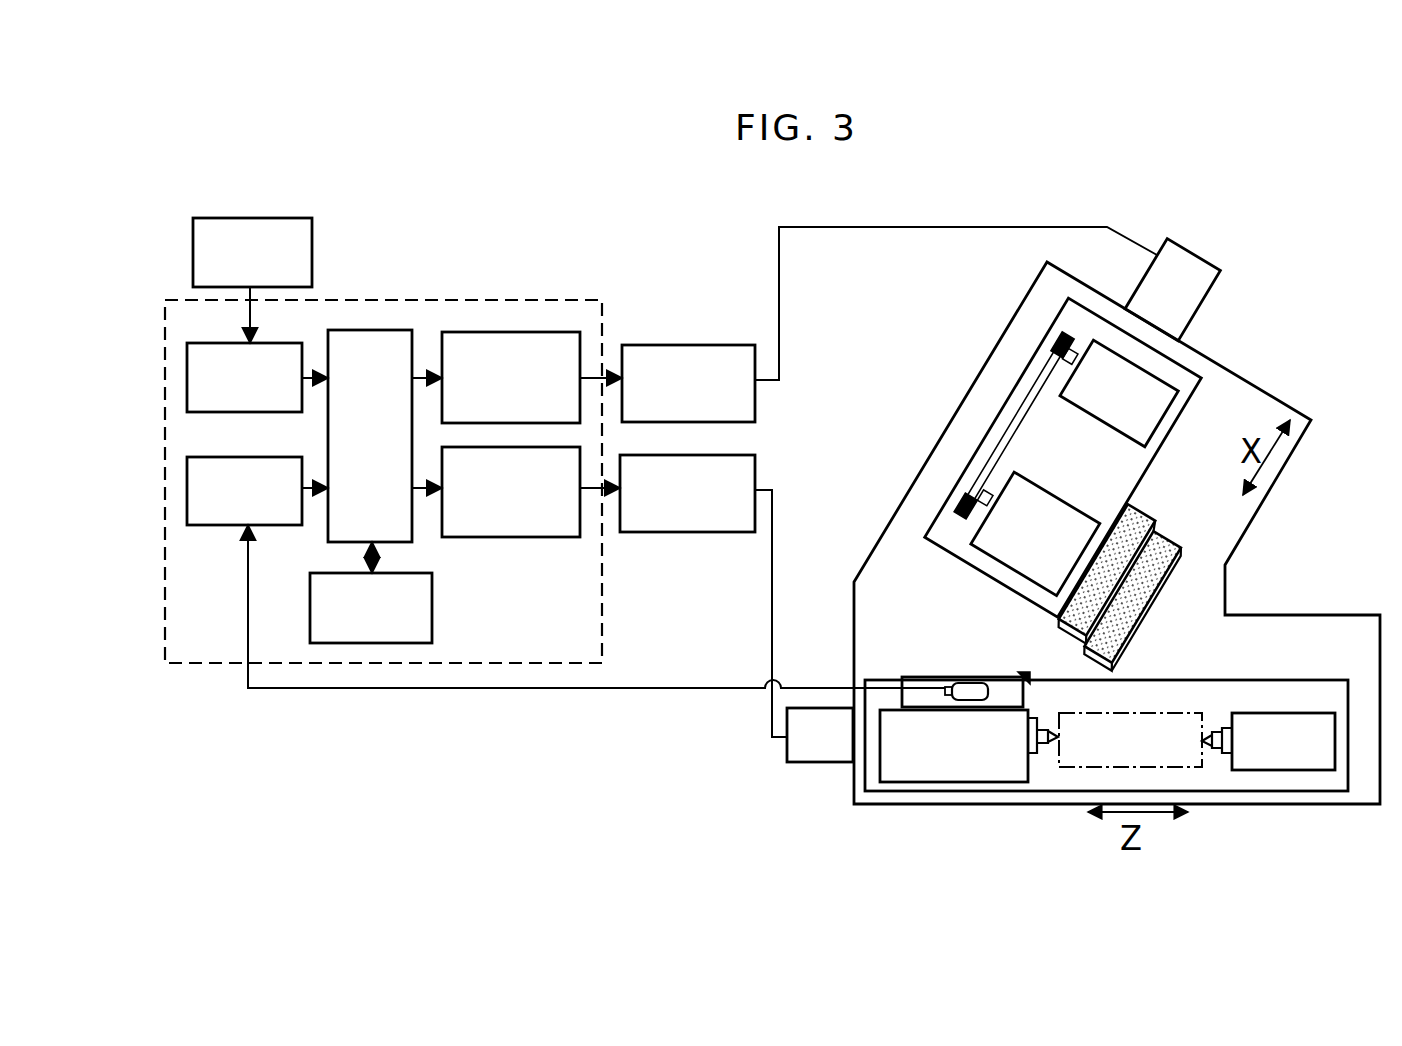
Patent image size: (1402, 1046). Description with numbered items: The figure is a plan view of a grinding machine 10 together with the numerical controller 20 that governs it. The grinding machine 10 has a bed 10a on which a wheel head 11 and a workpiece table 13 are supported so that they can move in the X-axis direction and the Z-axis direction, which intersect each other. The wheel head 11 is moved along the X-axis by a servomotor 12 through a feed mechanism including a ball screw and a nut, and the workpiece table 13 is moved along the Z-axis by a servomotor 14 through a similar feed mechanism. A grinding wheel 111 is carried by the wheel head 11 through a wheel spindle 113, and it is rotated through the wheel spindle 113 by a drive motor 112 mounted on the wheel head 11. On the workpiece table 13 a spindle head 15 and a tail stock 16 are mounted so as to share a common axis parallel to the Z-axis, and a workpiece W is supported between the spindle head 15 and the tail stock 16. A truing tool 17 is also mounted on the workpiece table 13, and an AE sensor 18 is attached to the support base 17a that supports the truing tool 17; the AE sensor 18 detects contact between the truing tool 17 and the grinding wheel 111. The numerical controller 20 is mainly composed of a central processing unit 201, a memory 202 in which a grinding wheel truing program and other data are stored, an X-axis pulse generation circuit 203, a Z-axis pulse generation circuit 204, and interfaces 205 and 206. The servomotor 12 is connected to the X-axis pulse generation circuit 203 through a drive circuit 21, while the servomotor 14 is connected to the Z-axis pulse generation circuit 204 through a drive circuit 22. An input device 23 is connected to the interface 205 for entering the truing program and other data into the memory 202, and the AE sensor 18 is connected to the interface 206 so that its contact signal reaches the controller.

The grinding machine 10 is at (1251, 640).
The bed 10a is at (883, 552).
The wheel head 11 is at (1005, 423).
The servomotor 12 is at (1195, 267).
The workpiece table 13 is at (1278, 690).
The servomotor 14 is at (820, 758).
The spindle head 15 is at (957, 771).
The tail stock 16 is at (1285, 763).
The truing tool 17 is at (1020, 674).
The support base 17a is at (928, 682).
The AE sensor 18 is at (972, 684).
The numerical controller 20 is at (575, 297).
The drive circuit 21 is at (690, 345).
The drive circuit 22 is at (688, 532).
The input device 23 is at (248, 211).
The grinding wheel 111 is at (1142, 507).
The drive motor 112 is at (1147, 380).
The wheel spindle 113 is at (1079, 558).
The central processing unit 201 is at (383, 330).
The memory 202 is at (432, 613).
The X-axis pulse generation circuit 203 is at (505, 332).
The Z-axis pulse generation circuit 204 is at (523, 525).
The interface 205 is at (208, 341).
The interface 206 is at (228, 455).
The workpiece W is at (1137, 712).